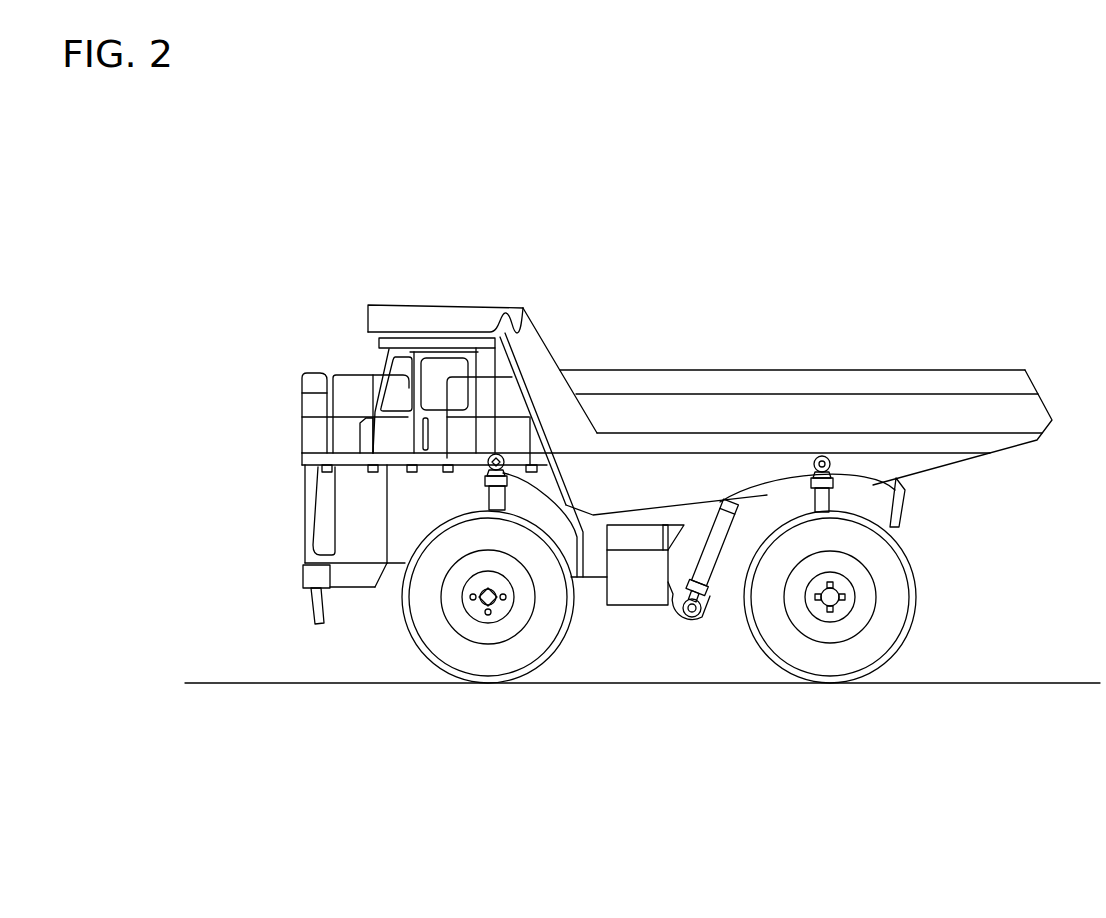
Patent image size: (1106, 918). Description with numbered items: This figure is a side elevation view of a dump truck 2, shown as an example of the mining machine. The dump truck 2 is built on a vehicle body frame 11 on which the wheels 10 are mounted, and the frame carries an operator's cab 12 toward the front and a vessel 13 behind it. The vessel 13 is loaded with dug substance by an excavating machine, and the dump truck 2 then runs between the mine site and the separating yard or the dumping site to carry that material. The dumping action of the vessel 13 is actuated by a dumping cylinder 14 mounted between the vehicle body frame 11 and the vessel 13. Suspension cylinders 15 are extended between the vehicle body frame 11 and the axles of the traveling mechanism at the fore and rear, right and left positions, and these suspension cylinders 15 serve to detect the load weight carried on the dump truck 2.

The dump truck 2 is at (677, 504).
The wheels 10 is at (517, 683).
The vehicle body frame 11 is at (740, 537).
The operator's cab 12 is at (412, 333).
The vessel 13 is at (898, 397).
The dumping cylinder 14 is at (687, 620).
The suspension cylinders 15 is at (496, 454).